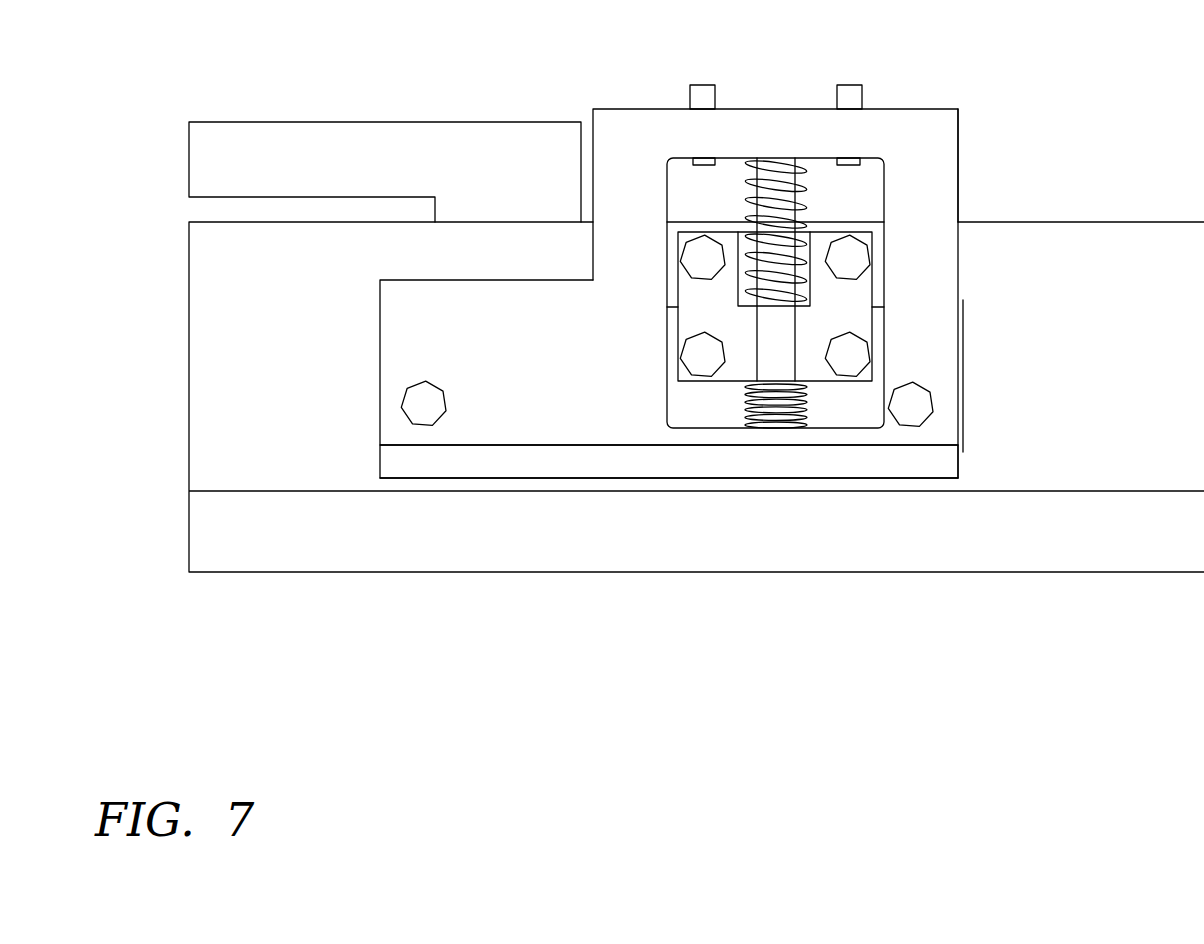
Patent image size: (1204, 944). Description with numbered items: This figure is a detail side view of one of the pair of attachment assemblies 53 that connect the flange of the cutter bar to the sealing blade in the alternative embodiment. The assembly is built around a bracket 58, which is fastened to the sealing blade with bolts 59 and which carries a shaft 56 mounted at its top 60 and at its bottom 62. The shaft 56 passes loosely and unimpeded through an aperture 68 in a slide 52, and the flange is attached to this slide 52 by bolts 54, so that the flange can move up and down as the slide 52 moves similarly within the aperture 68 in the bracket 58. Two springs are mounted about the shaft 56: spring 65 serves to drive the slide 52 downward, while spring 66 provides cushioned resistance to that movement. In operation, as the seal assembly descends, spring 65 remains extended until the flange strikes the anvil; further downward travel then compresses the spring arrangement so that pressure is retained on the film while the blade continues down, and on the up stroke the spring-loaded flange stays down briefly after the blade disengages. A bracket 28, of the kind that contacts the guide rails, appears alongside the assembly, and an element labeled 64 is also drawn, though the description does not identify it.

The bracket 28 is at (338, 135).
The slide 52 is at (848, 305).
The attachment assembly 53 is at (1032, 197).
The bolt 54 is at (703, 363).
The shaft 56 is at (772, 158).
The bracket 58 is at (928, 167).
The bolt 59 is at (420, 398).
The top of bracket 60 is at (823, 122).
The bottom of bracket 62 is at (690, 435).
The plunger shaft 64 is at (766, 363).
The spring 65 is at (800, 186).
The spring 66 is at (777, 400).
The aperture 68 is at (678, 185).